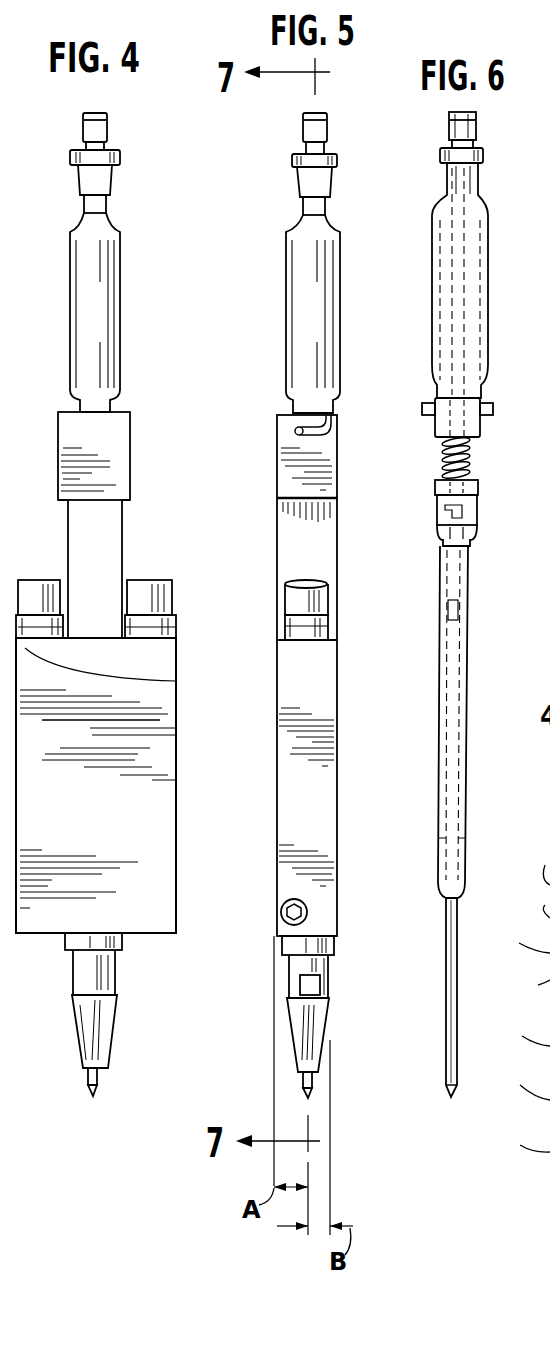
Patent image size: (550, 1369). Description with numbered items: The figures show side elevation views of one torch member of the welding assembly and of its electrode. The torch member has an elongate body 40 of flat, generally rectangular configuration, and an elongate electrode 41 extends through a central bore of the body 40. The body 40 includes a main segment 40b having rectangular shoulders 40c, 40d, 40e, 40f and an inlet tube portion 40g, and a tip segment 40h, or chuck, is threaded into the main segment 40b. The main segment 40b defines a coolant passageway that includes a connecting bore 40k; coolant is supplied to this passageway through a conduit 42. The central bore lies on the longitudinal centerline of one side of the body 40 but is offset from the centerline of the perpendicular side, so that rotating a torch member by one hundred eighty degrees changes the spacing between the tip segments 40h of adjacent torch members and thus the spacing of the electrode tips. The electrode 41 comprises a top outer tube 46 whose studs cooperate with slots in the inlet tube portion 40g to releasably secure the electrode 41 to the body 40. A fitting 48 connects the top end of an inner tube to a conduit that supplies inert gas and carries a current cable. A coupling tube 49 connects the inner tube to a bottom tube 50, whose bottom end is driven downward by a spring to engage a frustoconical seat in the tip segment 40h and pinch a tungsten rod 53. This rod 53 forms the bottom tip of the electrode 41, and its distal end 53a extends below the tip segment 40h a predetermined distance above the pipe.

In FIG. 4, the elongate body 40 is at (176, 795).
In FIG. 5, the elongate body 40 is at (337, 727).
In FIG. 4, the main segment 40b is at (160, 750).
In FIG. 4, the rectangular shoulder 40c is at (30, 925).
In FIG. 4, the rectangular shoulder 40d is at (168, 922).
In FIG. 4, the rectangular shoulder 40e is at (176, 681).
In FIG. 4, the rectangular shoulder 40f is at (168, 660).
In FIG. 4, the inlet tube portion 40g is at (125, 452).
In FIG. 4, the tip segment 40h is at (80, 1040).
In FIG. 5, the connecting bore 40k is at (272, 930).
In FIG. 4, the elongate electrode 41 is at (120, 323).
In FIG. 5, the elongate electrode 41 is at (340, 335).
In FIG. 6, the elongate electrode 41 is at (468, 660).
In FIG. 4, the conduit 42 is at (42, 548).
In FIG. 6, the top outer tube 46 is at (480, 390).
In FIG. 6, the fitting 48 is at (485, 157).
In FIG. 6, the coupling tube 49 is at (480, 510).
In FIG. 6, the bottom tube 50 is at (470, 580).
In FIG. 6, the tungsten rod 53 is at (457, 1015).
In FIG. 6, the distal end 53a is at (451, 1097).